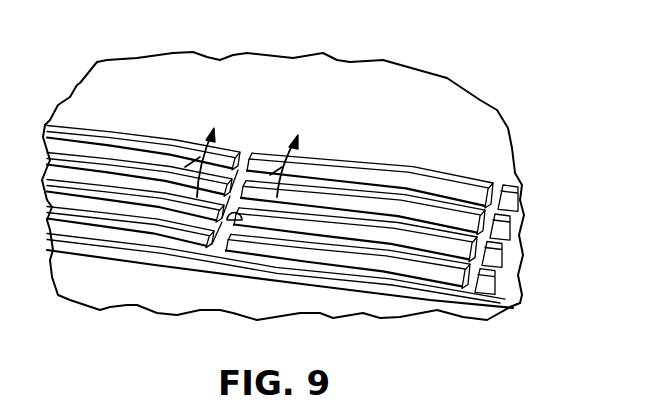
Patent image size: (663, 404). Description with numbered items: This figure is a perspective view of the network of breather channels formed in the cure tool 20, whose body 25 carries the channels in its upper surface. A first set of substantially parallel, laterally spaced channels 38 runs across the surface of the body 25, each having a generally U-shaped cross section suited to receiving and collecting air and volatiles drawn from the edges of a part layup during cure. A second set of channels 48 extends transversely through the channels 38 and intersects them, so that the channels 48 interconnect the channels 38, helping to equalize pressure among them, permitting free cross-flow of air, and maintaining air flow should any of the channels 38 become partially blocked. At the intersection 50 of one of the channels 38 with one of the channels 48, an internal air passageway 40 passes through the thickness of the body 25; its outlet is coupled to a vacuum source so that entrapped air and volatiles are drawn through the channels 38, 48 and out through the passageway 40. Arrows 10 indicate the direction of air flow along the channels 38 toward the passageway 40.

The fluid flow direction 10 is at (256, 144).
The cure tool 20 is at (103, 97).
The body 25 is at (353, 93).
The channels 38 is at (395, 164).
The internal air passageway 40 is at (230, 232).
The channels 48 is at (245, 155).
The intersection 50 is at (246, 221).